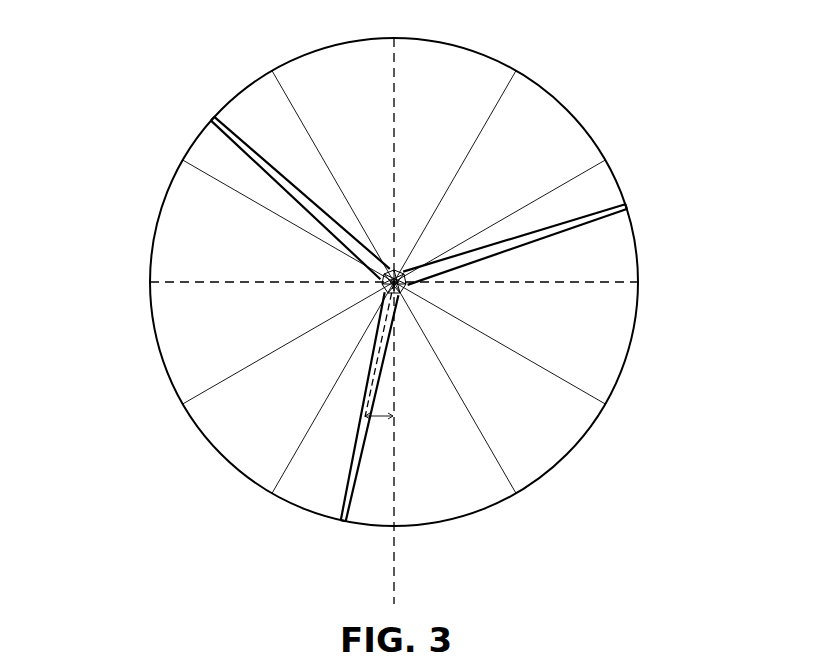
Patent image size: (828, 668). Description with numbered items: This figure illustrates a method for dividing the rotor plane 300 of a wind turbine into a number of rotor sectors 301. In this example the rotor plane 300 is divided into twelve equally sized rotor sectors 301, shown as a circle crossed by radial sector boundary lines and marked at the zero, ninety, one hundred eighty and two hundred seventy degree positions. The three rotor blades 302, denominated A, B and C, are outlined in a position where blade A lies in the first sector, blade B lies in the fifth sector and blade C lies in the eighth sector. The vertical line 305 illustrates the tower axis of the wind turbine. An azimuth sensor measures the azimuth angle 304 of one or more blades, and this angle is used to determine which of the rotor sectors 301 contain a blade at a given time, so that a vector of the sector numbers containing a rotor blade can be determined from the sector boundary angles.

The rotor plane 300 is at (499, 56).
The rotor sectors 301 is at (222, 410).
The rotor blades 302 is at (221, 122).
The azimuth angle 304 is at (395, 403).
The vertical line 305 is at (394, 578).